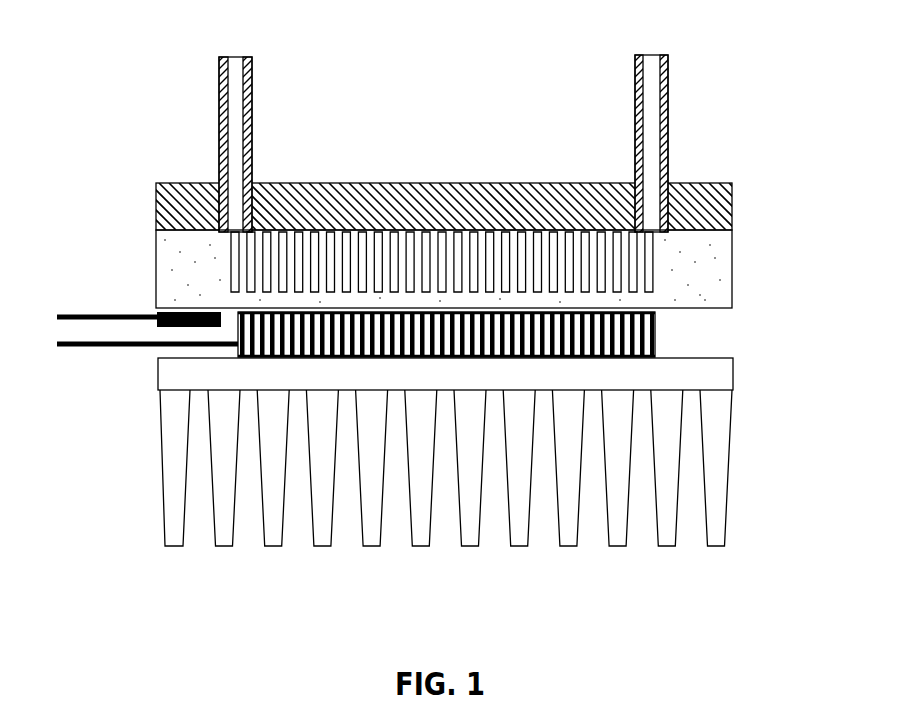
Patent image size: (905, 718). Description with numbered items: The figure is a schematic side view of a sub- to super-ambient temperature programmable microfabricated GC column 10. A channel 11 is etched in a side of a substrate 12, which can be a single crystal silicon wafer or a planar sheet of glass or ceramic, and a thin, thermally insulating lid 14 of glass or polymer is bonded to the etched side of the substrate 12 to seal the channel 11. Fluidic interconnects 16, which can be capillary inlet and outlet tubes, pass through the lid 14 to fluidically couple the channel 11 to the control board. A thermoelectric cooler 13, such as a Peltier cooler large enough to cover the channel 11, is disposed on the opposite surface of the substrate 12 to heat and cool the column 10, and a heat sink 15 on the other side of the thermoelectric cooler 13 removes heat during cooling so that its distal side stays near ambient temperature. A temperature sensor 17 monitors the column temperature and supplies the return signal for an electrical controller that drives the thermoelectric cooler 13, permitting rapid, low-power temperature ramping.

The temperature programmable microfabricated GC column 10 is at (118, 238).
The channel 11 is at (652, 263).
The substrate 12 is at (732, 281).
The thermoelectric cooler 13 is at (655, 338).
The lid 14 is at (732, 200).
The heat sink 15 is at (727, 439).
The fluidic interconnects 16 is at (633, 95).
The temperature sensor 17 is at (154, 322).